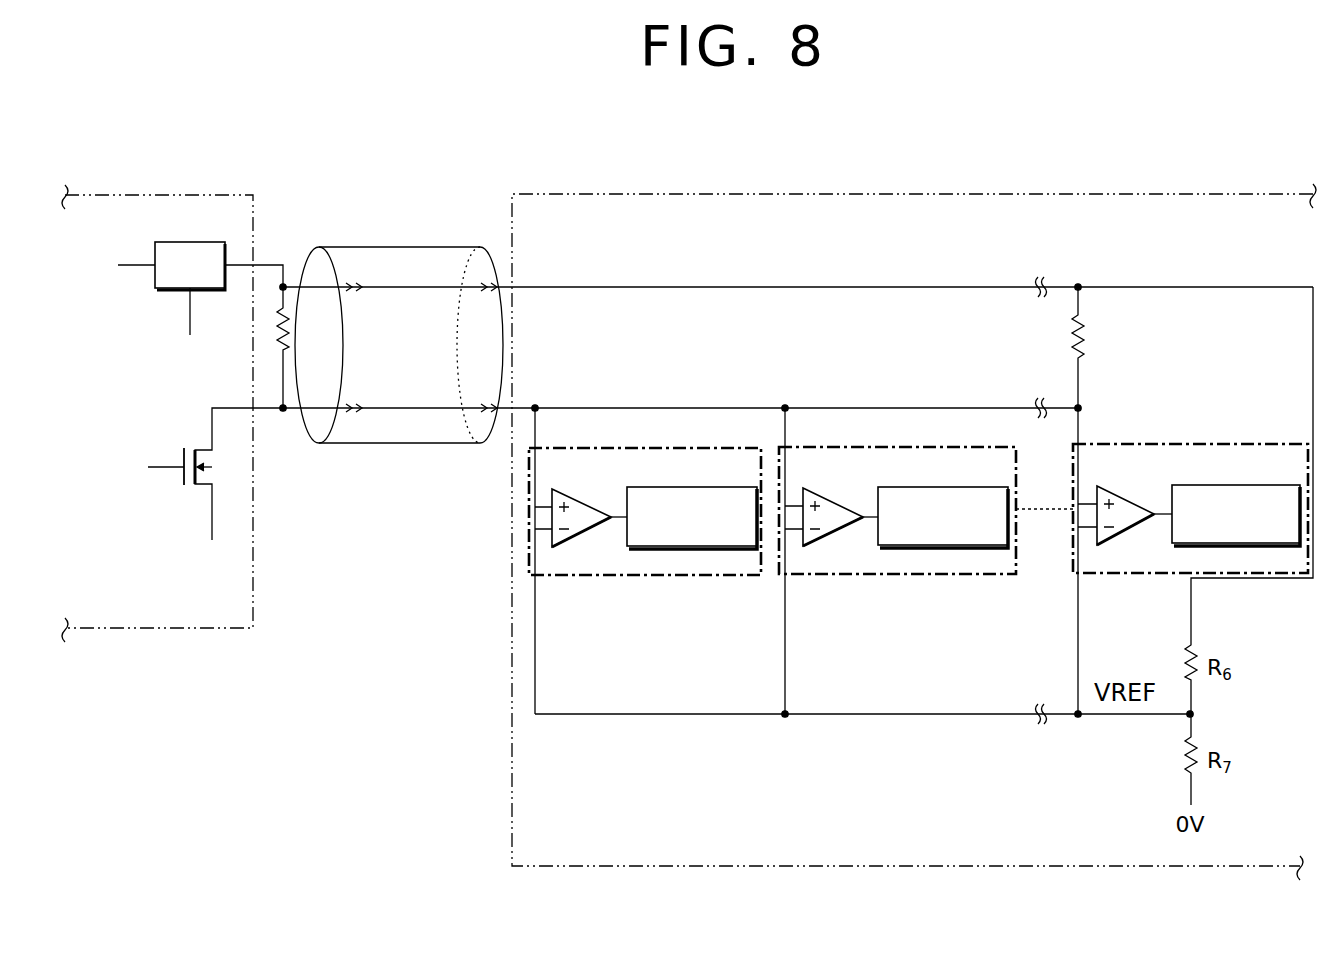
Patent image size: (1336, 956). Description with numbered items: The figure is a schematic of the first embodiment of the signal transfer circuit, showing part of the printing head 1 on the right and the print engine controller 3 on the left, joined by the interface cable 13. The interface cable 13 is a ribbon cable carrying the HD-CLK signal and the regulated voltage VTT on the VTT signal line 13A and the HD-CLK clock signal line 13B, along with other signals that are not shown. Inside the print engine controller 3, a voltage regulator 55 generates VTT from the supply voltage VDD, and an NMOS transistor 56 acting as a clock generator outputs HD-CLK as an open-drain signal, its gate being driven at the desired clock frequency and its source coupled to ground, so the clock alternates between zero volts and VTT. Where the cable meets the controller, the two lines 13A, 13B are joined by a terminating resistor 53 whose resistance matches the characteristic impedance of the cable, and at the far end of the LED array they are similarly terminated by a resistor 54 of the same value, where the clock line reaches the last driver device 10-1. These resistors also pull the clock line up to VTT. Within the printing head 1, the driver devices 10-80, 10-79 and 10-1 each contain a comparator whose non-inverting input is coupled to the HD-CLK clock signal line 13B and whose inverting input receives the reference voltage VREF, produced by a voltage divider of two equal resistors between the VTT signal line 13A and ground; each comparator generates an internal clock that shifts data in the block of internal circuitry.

The printing head 1 is at (510, 835).
The print engine controller 3 is at (193, 193).
The interface cable 13 is at (403, 246).
The VTT signal line 13A is at (718, 286).
The HD-CLK clock signal line 13B is at (718, 407).
The driver device 10-80 is at (645, 511).
The driver device 10-79 is at (897, 511).
The last driver device 10-1 is at (1190, 511).
The terminating resistor 53 is at (340, 327).
The terminating resistor 54 is at (1065, 330).
The voltage regulator 55 is at (189, 242).
The NMOS transistor 56 is at (182, 462).